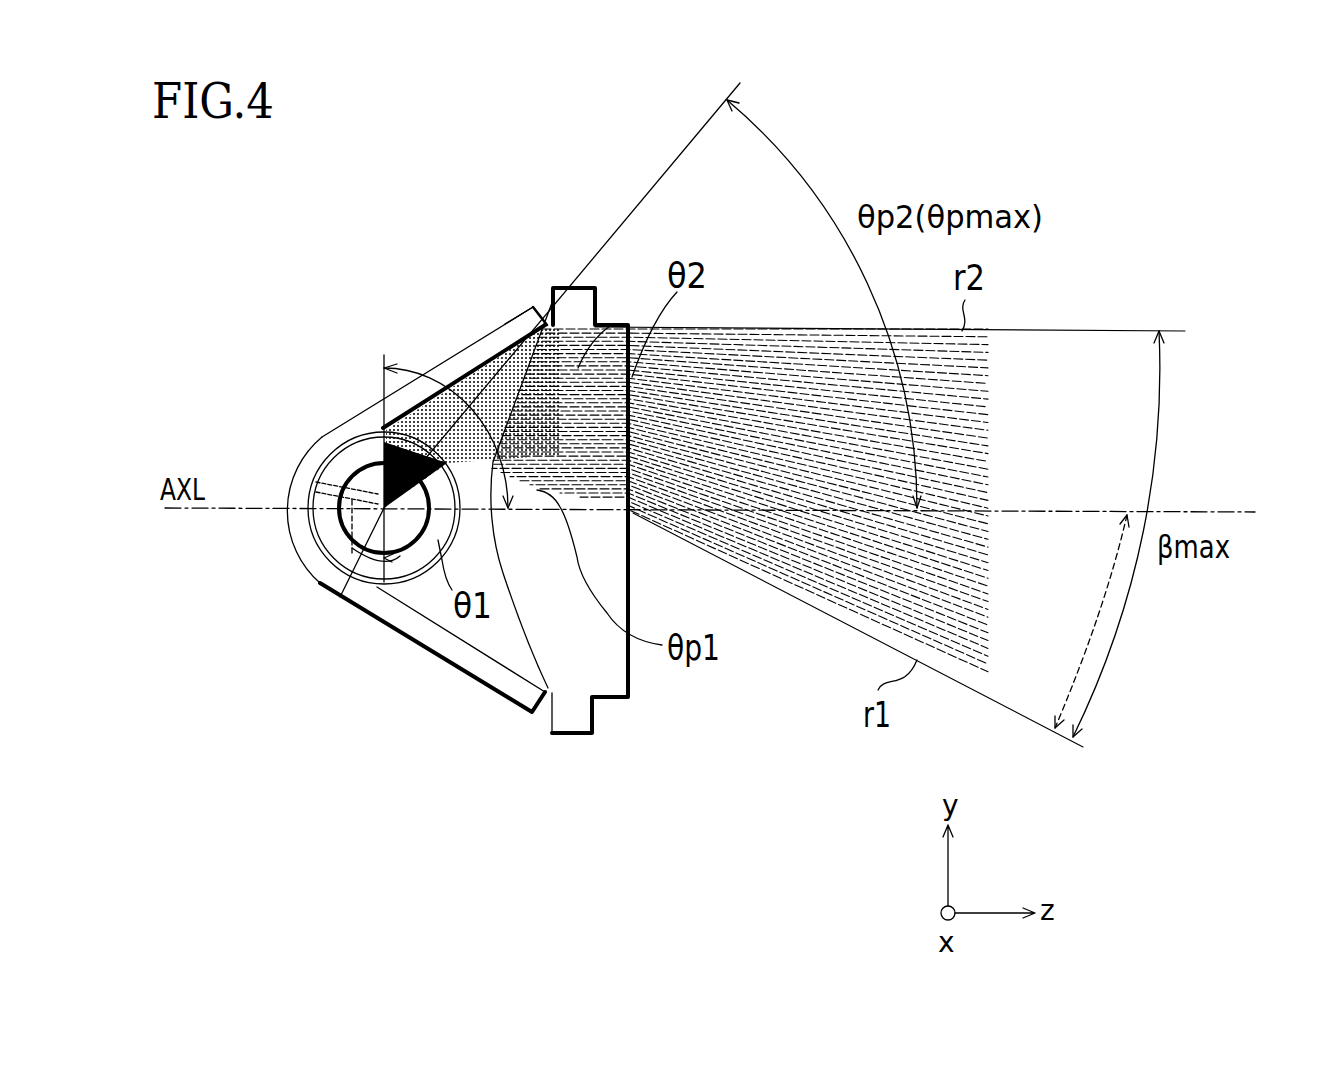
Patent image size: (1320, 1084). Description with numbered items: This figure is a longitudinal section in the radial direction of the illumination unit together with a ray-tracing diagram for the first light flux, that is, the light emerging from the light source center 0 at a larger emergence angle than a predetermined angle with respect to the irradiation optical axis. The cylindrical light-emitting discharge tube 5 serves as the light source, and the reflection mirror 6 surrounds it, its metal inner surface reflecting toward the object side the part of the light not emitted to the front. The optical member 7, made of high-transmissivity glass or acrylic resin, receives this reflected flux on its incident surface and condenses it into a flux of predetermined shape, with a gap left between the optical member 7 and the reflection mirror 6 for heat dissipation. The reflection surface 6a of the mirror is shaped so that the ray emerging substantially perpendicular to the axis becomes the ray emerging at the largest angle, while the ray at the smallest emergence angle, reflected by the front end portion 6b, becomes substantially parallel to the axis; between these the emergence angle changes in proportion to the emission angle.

The light-emitting discharge tube 5 is at (350, 462).
The reflection mirror 6 is at (318, 551).
The reflection surface 6a is at (453, 381).
The front end portion 6b is at (518, 325).
The optical member 7 is at (560, 722).
The light source center 0 is at (345, 588).